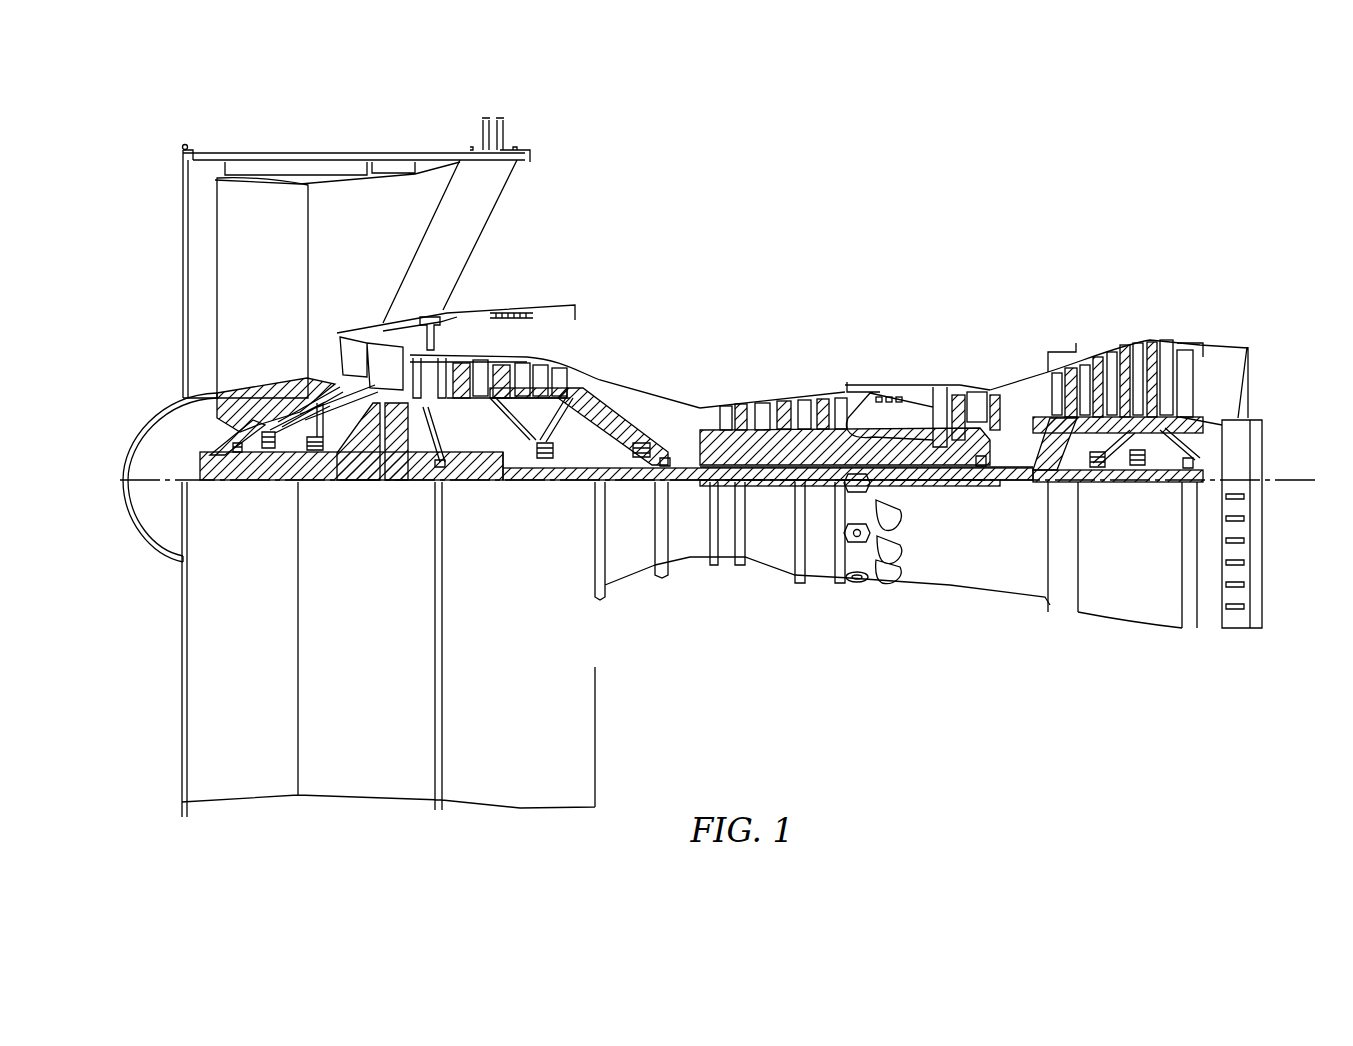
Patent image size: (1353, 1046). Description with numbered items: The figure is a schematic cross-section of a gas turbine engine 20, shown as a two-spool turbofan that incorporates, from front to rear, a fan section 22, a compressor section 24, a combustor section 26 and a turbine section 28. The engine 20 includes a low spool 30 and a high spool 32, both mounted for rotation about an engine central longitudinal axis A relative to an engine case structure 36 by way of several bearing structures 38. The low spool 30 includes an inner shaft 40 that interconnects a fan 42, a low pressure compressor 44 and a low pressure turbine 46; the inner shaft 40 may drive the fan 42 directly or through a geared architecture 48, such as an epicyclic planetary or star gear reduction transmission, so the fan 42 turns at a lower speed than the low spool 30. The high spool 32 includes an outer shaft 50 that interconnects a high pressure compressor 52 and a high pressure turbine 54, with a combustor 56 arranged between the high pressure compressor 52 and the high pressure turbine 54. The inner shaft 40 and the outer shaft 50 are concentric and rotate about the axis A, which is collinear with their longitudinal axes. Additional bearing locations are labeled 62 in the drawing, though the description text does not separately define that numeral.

The gas turbine engine 20 is at (1020, 203).
The fan section 22 is at (175, 130).
The compressor section 24 is at (447, 268).
The combustor section 26 is at (847, 268).
The turbine section 28 is at (1190, 268).
The low spool 30 is at (773, 486).
The high spool 32 is at (810, 440).
The engine case structure 36 is at (822, 580).
The bearing structures 38 is at (1048, 345).
The inner shaft 40 is at (620, 483).
The fan 42 is at (238, 294).
The low pressure compressor 44 is at (522, 372).
The low pressure turbine 46 is at (1118, 352).
The geared architecture 48 is at (388, 462).
The outer shaft 50 is at (897, 462).
The high pressure compressor 52 is at (752, 440).
The high pressure turbine 54 is at (975, 392).
The combustor 56 is at (898, 420).
The bearing 62 is at (668, 466).
The engine central longitudinal axis A is at (1286, 470).